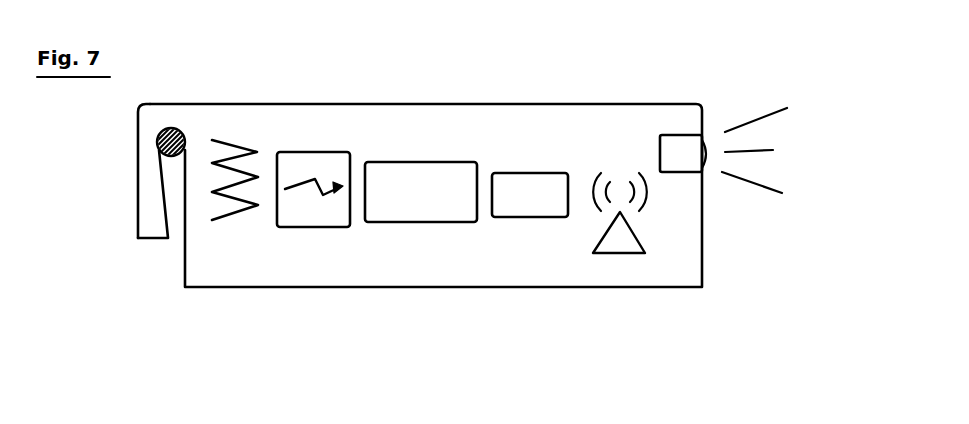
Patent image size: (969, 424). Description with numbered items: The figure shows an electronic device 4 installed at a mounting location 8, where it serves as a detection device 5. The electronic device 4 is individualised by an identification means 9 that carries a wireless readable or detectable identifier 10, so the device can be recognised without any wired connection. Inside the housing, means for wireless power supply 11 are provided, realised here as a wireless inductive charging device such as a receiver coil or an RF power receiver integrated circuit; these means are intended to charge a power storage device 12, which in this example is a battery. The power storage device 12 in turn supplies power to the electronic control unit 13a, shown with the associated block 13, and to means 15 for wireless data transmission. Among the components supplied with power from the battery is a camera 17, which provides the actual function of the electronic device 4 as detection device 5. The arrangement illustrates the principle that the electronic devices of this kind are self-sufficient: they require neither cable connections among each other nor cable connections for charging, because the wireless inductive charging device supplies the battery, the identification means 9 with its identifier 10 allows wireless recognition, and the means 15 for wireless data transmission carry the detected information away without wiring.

The electronic device 4 is at (420, 147).
The detection device 5 is at (497, 93).
The mounting location 8 is at (160, 146).
The identification means 9 is at (530, 273).
The identifier 10 is at (530, 217).
The means for wireless power supply 11 is at (232, 202).
The power storage device 12 is at (318, 217).
The energy store 13 is at (421, 287).
The electronic control unit 13a is at (422, 198).
The means for wireless data transmission 15 is at (617, 242).
The camera 17 is at (677, 147).